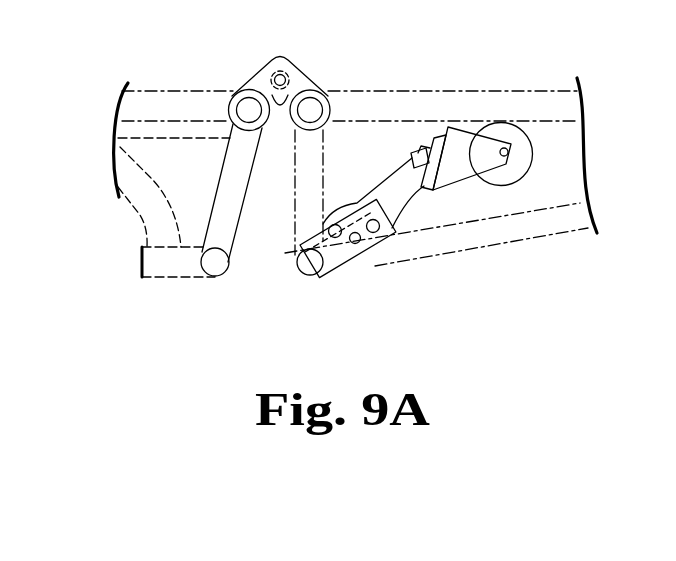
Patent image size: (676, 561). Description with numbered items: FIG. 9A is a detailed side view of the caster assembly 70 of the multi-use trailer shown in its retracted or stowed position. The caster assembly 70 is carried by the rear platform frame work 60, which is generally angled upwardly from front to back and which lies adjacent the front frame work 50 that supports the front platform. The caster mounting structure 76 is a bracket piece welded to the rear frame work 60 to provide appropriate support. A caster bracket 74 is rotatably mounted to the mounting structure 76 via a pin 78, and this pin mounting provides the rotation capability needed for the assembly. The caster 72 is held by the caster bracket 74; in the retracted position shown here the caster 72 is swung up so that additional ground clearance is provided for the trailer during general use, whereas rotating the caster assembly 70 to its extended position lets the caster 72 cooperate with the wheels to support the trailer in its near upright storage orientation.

The frame work 50 is at (152, 212).
The rear platform frame work 60 is at (358, 100).
The caster assembly 70 is at (410, 232).
The caster 72 is at (518, 168).
The caster bracket 74 is at (352, 256).
The caster mounting structure 76 is at (292, 248).
The pin 78 is at (375, 243).